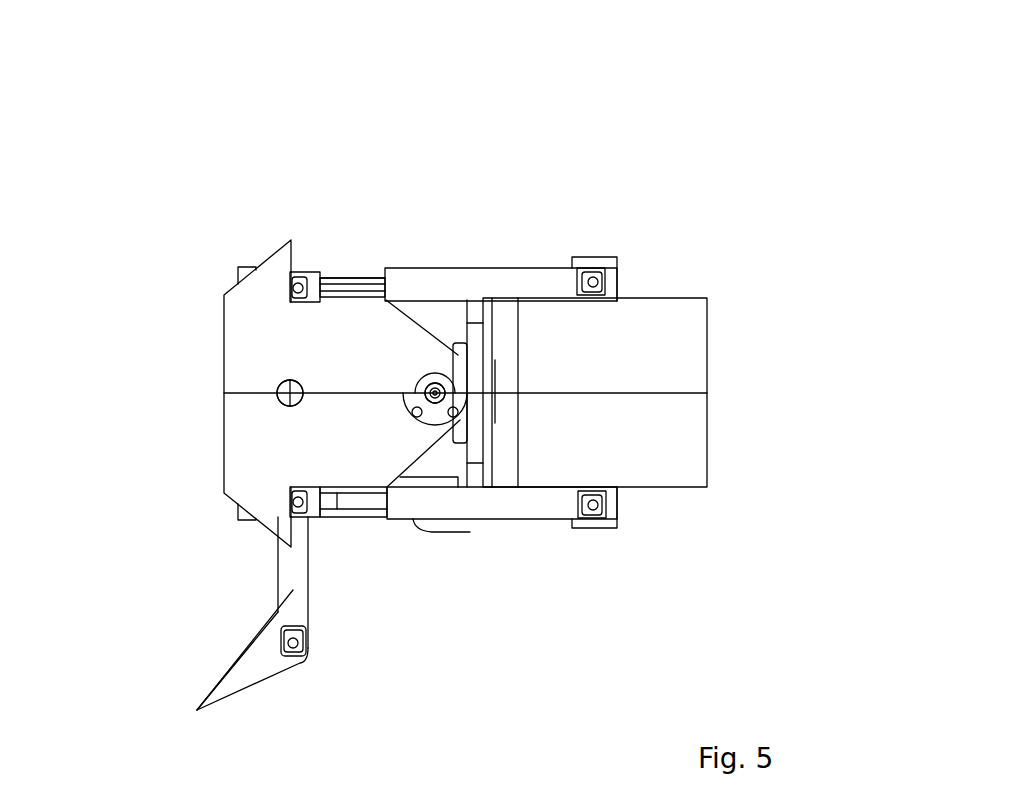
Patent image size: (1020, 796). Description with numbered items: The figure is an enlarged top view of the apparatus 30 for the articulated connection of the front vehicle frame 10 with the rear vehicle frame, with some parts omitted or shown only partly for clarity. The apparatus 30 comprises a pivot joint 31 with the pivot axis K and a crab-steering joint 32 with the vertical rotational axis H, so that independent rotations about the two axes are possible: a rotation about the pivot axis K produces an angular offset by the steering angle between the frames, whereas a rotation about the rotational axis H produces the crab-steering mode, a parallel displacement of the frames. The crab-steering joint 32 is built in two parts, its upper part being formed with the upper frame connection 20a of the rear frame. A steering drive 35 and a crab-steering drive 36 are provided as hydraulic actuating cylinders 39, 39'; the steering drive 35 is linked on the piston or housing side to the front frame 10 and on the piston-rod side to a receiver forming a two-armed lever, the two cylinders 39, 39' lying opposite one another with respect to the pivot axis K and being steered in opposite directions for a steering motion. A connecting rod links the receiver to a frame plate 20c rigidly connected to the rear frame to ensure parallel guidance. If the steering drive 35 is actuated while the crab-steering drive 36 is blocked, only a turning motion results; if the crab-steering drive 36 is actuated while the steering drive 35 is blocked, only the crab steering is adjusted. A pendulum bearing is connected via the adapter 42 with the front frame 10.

The apparatus 30 is at (717, 70).
The front vehicle frame 10 is at (620, 256).
The upper frame connection 20a is at (255, 374).
The frame plate 20c is at (247, 663).
The pivot joint 31 is at (277, 397).
The crab-steering joint 32 is at (432, 390).
The steering drive 35 is at (462, 273).
The crab-steering drive 36 is at (288, 563).
The hydraulic actuating cylinder 39 is at (501, 205).
The hydraulic actuating cylinder 39' is at (502, 568).
The adapter 42 is at (617, 422).
The pivot axis K is at (287, 383).
The rotational axis H is at (440, 384).